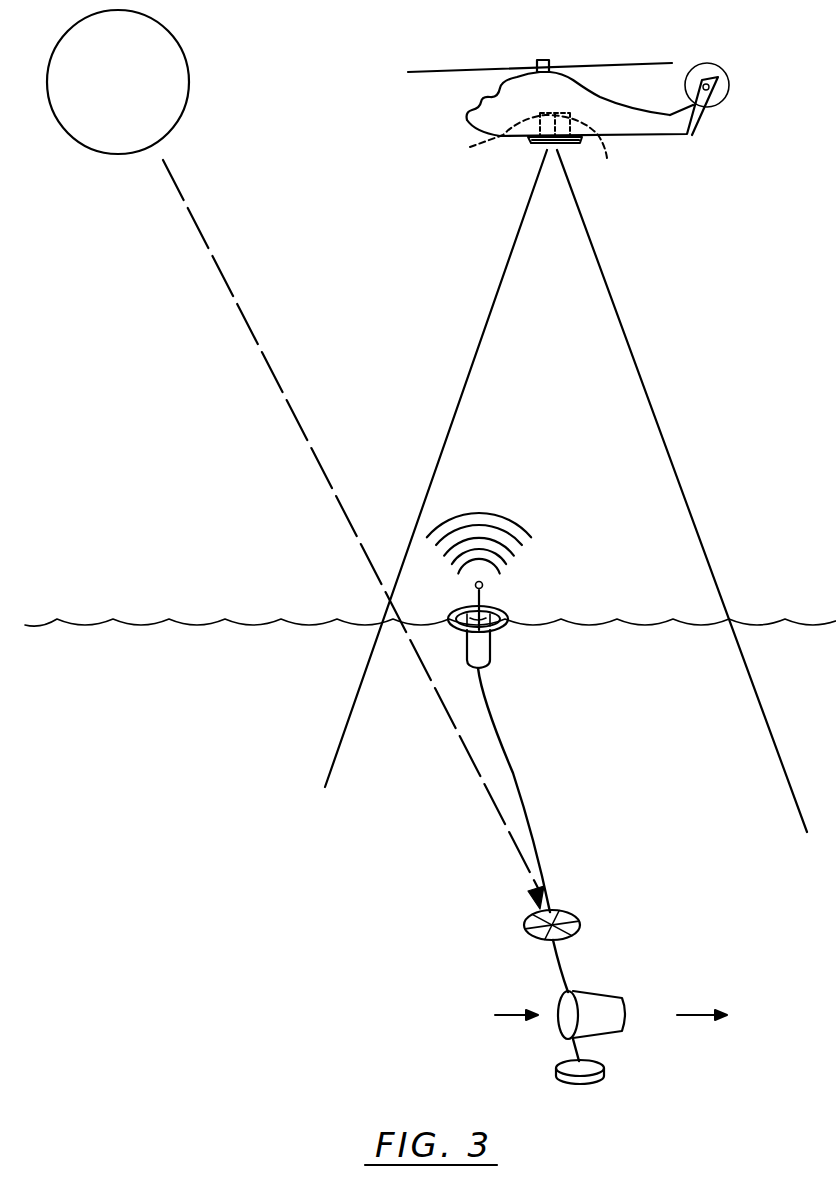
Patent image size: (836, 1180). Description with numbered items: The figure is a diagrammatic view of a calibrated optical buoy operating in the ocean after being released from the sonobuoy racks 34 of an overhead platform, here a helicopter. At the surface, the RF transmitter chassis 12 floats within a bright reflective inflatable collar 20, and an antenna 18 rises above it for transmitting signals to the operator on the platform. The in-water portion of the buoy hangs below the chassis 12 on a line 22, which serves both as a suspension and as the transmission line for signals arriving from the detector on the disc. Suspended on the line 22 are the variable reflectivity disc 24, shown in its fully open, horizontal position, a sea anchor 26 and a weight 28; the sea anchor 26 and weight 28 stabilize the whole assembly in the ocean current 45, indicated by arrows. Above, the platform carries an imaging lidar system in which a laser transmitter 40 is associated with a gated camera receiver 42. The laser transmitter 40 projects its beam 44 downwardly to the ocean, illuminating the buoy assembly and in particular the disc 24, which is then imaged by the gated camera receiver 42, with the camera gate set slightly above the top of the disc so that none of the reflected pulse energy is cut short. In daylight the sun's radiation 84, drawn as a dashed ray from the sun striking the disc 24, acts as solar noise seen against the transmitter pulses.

The RF transmitter chassis 12 is at (491, 663).
The antenna 18 is at (483, 600).
The bright reflective inflatable collar 20 is at (503, 632).
The line 22 is at (514, 775).
The variable reflectivity disc 24 is at (579, 932).
The sea anchor 26 is at (611, 995).
The weight 28 is at (605, 1070).
The sonobuoy racks 34 is at (527, 142).
The laser transmitter 40 is at (522, 140).
The gated camera receiver 42 is at (589, 143).
The beam 44 is at (634, 357).
The ocean current 45 is at (585, 1019).
The sun's radiation 84 is at (230, 292).